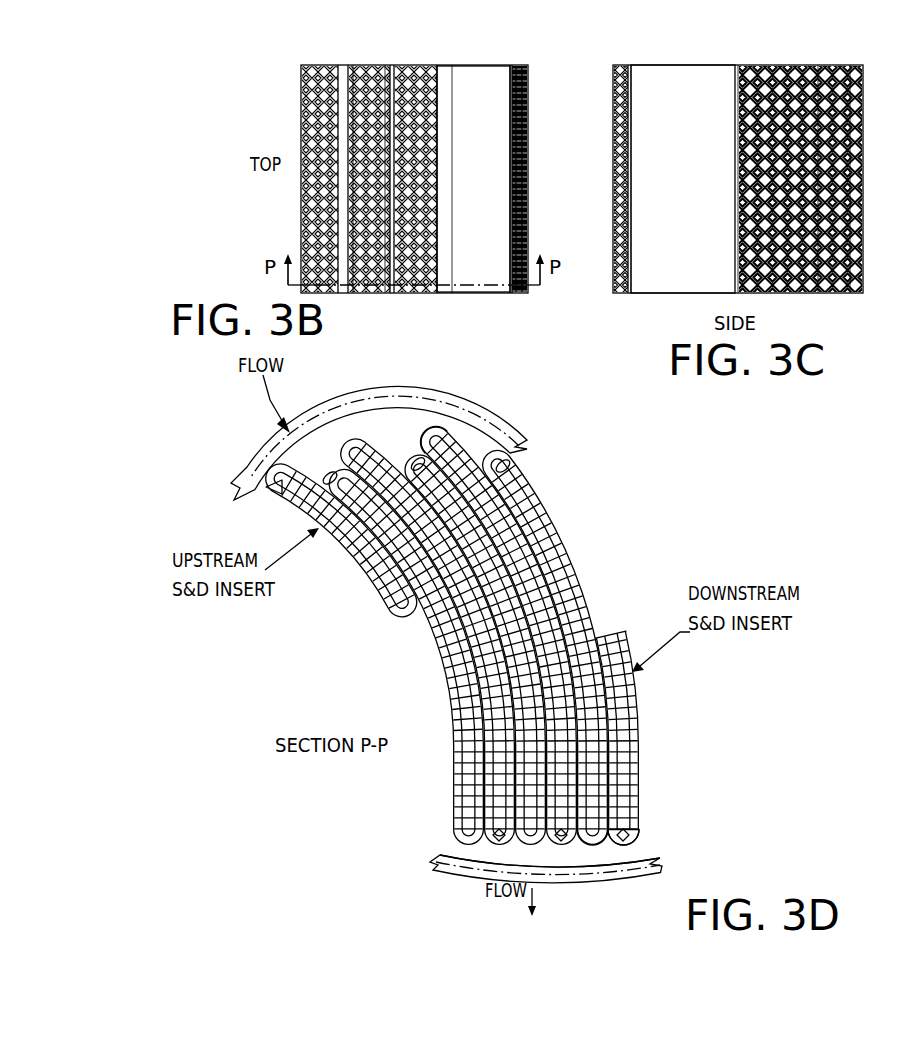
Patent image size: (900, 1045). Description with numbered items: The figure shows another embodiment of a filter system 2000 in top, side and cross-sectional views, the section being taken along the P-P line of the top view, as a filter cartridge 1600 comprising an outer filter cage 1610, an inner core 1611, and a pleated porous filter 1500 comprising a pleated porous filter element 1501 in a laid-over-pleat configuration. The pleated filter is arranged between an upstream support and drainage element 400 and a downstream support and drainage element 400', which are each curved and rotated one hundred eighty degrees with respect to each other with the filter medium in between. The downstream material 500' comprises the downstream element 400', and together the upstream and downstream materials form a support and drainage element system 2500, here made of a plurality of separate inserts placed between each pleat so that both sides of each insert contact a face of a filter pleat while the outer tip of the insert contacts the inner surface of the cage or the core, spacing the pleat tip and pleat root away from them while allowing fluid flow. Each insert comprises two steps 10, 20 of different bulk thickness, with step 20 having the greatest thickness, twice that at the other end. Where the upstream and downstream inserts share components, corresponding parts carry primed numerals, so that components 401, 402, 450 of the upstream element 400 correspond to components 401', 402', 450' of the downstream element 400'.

In FIG. 3B, the upstream support and drainage element 400 is at (373, 159).
In FIG. 3D, the upstream support and drainage element 400 is at (416, 602).
In FIG. 3B, the pleated porous filter 1500 is at (475, 87).
In FIG. 3C, the pleated porous filter 1500 is at (676, 86).
In FIG. 3D, the pleated porous filter 1500 is at (442, 846).
In FIG. 3D, the pleated porous filter element 1501 is at (572, 672).
In FIG. 3D, the first end of support and drainage element 401 is at (493, 603).
In FIG. 3D, the support and drainage element component 450 is at (433, 439).
In FIG. 3D, the outer filter cage 1610 is at (500, 437).
In FIG. 3D, the inner core 1611 is at (660, 862).
In FIG. 3D, the downstream support and drainage element component 402' is at (565, 450).
In FIG. 3D, the support and drainage element system 2500 is at (322, 477).
In FIG. 3D, the step 20 is at (373, 557).
In FIG. 3D, the step 10 is at (450, 660).
In FIG. 3D, the filter cartridge 1600 is at (481, 641).
In FIG. 3D, the downstream support and drainage material 500' is at (683, 671).
In FIG. 3D, the downstream support and drainage element 400' is at (683, 775).
In FIG. 3D, the downstream support and drainage element component 401' is at (676, 825).
In FIG. 3D, the filter system 2000 is at (331, 639).
In FIG. 3D, the support and drainage element component 402 is at (584, 875).
In FIG. 3D, the downstream support and drainage element component 450' is at (634, 875).